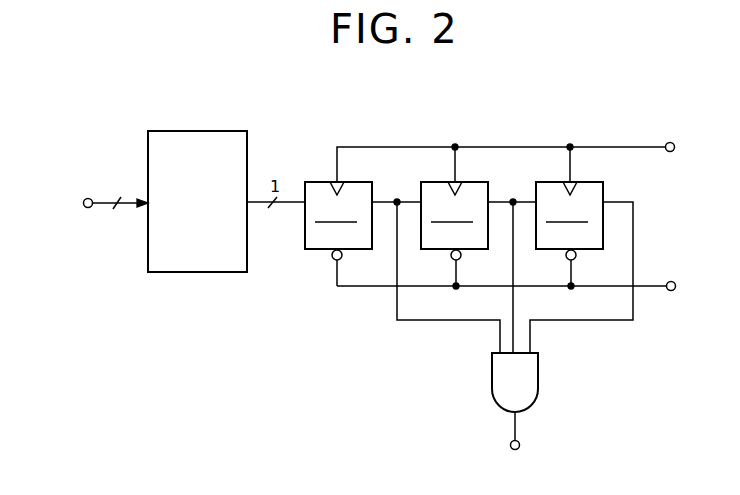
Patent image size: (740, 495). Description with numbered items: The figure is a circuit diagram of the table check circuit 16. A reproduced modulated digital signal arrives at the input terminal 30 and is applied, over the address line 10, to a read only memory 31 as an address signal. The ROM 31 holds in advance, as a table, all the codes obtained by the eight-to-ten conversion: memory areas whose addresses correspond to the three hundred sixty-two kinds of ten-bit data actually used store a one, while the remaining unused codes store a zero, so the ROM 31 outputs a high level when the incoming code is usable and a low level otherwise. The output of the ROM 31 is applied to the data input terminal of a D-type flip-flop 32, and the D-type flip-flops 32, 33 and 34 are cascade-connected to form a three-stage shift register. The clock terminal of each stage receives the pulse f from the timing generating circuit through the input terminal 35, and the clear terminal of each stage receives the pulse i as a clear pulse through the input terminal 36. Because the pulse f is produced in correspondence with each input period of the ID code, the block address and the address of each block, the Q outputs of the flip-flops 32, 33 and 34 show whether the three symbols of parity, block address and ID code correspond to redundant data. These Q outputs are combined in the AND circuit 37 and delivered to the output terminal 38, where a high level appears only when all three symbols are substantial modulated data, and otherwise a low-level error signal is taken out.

The input terminal 30 is at (88, 198).
The address bus 10 is at (119, 193).
The read only memory 31 is at (223, 131).
The table check circuit 16 is at (484, 112).
The D-type flip-flop 32 is at (312, 250).
The D-type flip-flop 33 is at (435, 250).
The D-type flip-flop 34 is at (551, 250).
The input terminal 35 is at (674, 143).
The input terminal 36 is at (674, 290).
The AND circuit 37 is at (539, 385).
The output terminal 38 is at (519, 444).